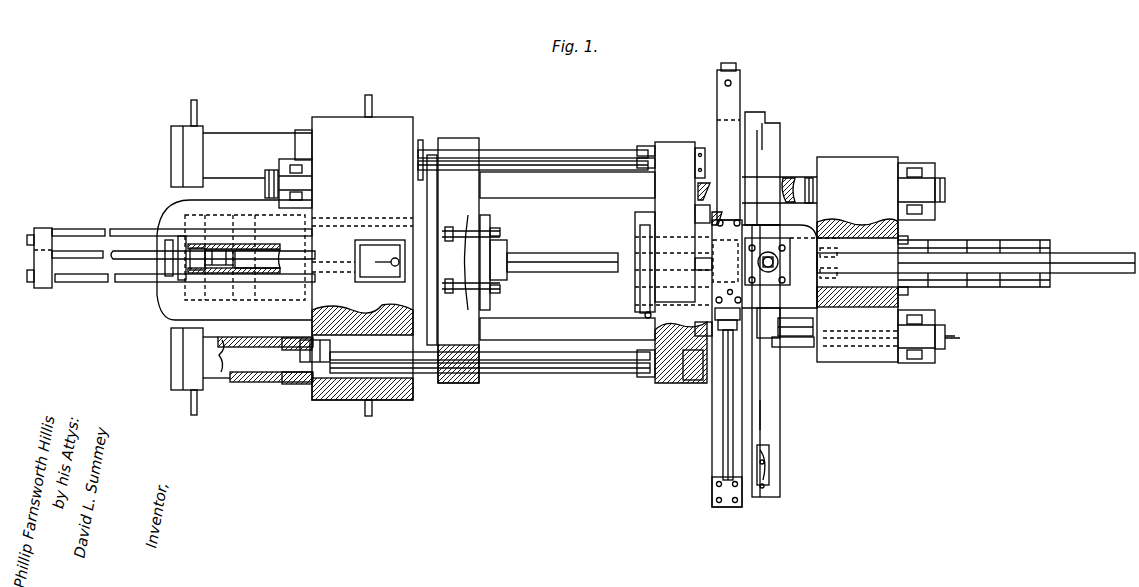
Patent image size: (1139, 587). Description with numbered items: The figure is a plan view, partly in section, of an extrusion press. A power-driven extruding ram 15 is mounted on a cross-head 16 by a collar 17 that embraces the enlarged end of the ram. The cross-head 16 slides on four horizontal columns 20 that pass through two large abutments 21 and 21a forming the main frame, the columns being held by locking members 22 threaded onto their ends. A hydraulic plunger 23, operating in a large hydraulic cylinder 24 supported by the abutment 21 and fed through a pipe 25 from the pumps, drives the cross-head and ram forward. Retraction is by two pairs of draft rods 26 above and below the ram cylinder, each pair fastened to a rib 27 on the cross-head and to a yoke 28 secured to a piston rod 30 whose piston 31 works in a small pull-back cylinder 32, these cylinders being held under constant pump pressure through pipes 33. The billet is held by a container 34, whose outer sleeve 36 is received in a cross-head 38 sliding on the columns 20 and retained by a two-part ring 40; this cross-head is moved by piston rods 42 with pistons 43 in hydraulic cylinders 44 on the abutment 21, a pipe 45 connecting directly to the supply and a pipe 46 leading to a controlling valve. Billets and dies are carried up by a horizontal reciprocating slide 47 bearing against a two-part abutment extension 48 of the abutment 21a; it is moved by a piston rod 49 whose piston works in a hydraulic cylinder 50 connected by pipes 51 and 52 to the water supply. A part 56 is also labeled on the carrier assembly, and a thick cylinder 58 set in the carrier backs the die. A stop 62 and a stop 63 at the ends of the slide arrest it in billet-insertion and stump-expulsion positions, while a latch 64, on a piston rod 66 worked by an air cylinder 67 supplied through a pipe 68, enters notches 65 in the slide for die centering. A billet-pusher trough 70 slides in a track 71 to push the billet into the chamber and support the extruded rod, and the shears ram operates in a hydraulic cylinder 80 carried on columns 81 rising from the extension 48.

The extruding ram 15 is at (585, 258).
The cross-head 16 is at (448, 260).
The collar 17 is at (508, 280).
The horizontal columns 20 is at (808, 180).
The abutment 21 is at (347, 258).
The abutment 21a is at (844, 259).
The locking members 22 is at (932, 161).
The hydraulic plunger 23 is at (256, 290).
The hydraulic cylinder 24 is at (167, 312).
The pipe 25 is at (112, 268).
The draft rods 26 is at (130, 231).
The rib 27 is at (462, 253).
The yoke 28 is at (44, 226).
The piston rod 30 is at (82, 240).
The piston 31 is at (218, 247).
The pull-back cylinder 32 is at (257, 258).
The pipes 33 is at (372, 260).
The container 34 is at (640, 232).
The outer sleeve 36 is at (713, 222).
The cross-head 38 is at (673, 262).
The two-part ring 40 is at (645, 296).
The piston rods 42 is at (578, 158).
The pistons 43 is at (330, 358).
The hydraulic cylinders 44 is at (242, 258).
The pipe 45 is at (373, 100).
The pipe 46 is at (198, 106).
The slide 47 is at (765, 438).
The abutment extension 48 is at (764, 363).
The piston rod 49 is at (725, 420).
The hydraulic cylinder 50 is at (717, 120).
The pipe 51 is at (732, 83).
The pipe 52 is at (735, 293).
The bracket 56 is at (700, 264).
The cylinder 58 is at (738, 372).
The stop 62 is at (763, 145).
The stop 63 is at (768, 488).
The latch 64 is at (773, 345).
The notches 65 is at (762, 410).
The piston rod 66 is at (860, 346).
The air cylinder 67 is at (872, 348).
The pipe 68 is at (957, 341).
The trough 70 is at (1121, 258).
The track 71 is at (990, 248).
The hydraulic cylinder 80 is at (772, 248).
The columns 81 is at (783, 252).